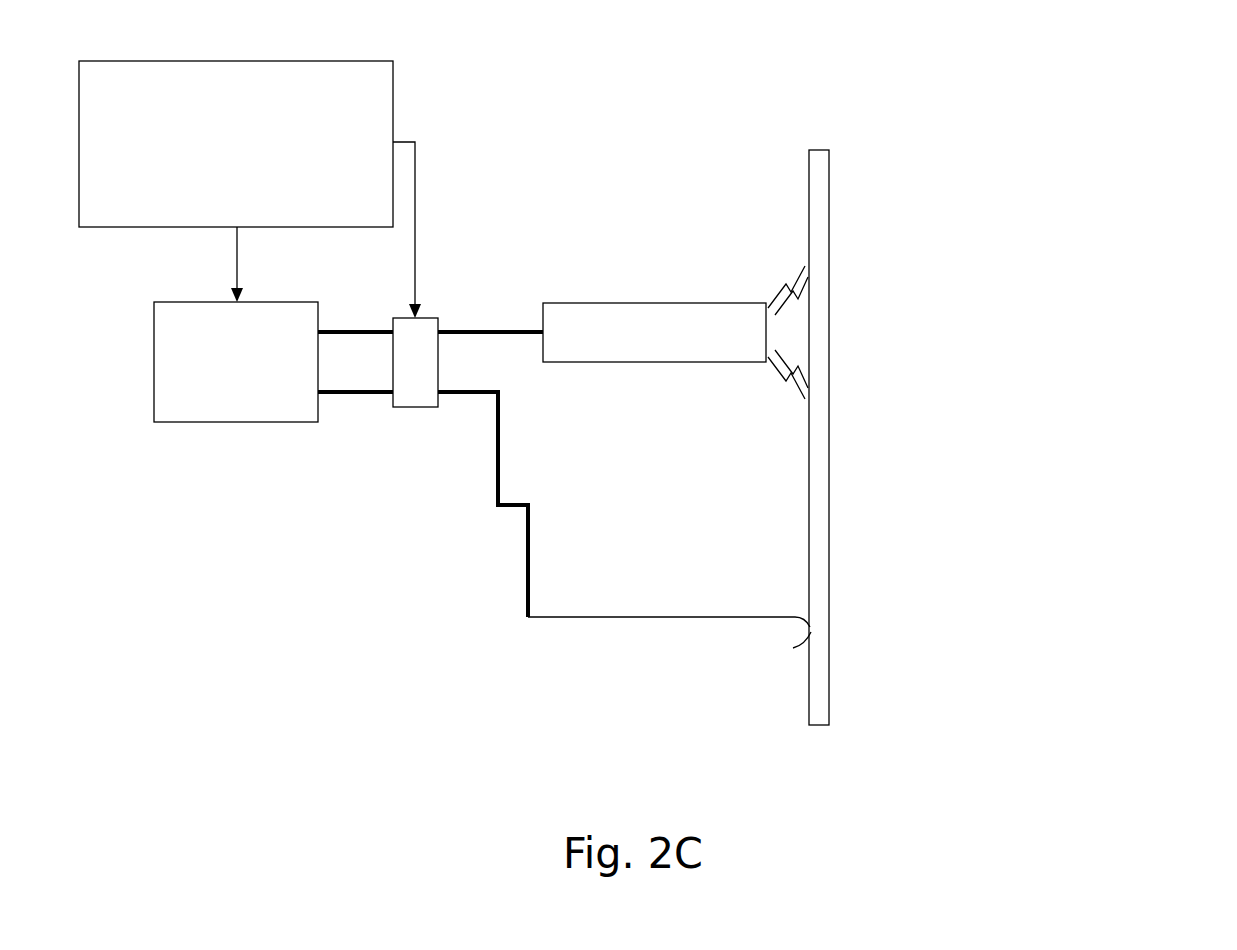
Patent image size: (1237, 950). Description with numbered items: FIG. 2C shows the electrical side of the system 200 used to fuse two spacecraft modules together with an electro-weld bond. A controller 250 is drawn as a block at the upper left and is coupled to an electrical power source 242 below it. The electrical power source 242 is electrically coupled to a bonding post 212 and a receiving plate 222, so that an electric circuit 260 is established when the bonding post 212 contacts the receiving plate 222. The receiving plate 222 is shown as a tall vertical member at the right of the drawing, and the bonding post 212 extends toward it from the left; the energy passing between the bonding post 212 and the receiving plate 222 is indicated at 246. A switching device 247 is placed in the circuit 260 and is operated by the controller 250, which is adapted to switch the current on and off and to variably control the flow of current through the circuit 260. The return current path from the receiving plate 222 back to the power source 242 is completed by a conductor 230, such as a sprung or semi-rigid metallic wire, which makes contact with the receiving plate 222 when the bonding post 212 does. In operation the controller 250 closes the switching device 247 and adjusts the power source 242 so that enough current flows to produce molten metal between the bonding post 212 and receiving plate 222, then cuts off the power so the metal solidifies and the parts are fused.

The system 200 is at (1062, 366).
The bonding post 212 is at (654, 303).
The receiving plate 222 is at (820, 150).
The conductor 230 is at (662, 617).
The electrical power source 242 is at (154, 362).
The radiant energy 246 is at (737, 258).
The switching device 247 is at (417, 407).
The controller 250 is at (236, 61).
The electric circuit 260 is at (440, 531).